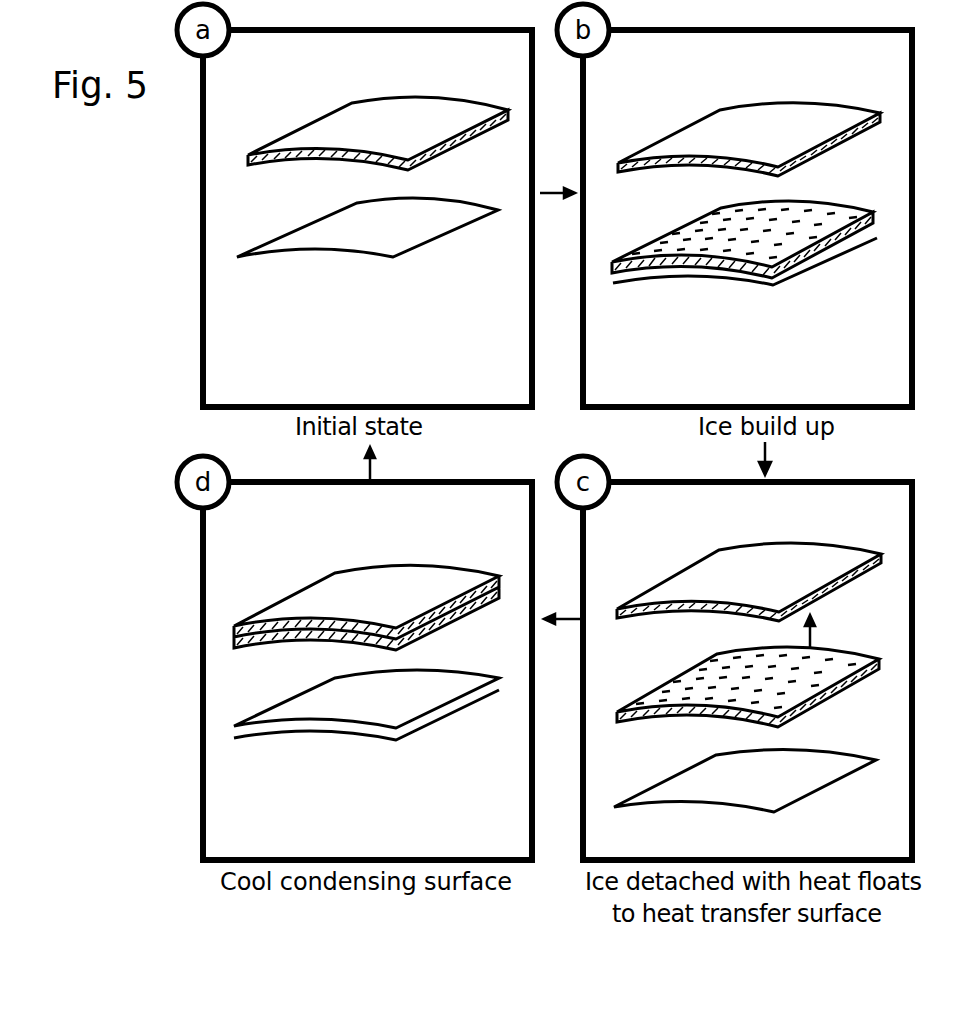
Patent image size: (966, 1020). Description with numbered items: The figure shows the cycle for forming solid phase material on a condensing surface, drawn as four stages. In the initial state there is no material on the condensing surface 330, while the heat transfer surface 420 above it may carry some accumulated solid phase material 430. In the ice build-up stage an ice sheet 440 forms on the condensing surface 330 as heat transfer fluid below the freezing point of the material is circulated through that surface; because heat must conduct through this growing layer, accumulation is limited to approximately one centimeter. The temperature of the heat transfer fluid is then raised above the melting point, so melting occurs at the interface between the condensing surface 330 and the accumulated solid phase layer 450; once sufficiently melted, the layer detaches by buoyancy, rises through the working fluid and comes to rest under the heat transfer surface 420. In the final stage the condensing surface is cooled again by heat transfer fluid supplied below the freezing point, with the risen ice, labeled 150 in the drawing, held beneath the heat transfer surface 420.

The heat transfer surface 420 is at (393, 100).
The accumulated solid phase material 430 is at (262, 166).
The condensing surface 330 is at (290, 251).
The ice sheet 440 is at (655, 243).
The accumulated solid phase layer 450 is at (618, 708).
The ice attached to heat transfer surface 150 is at (400, 637).